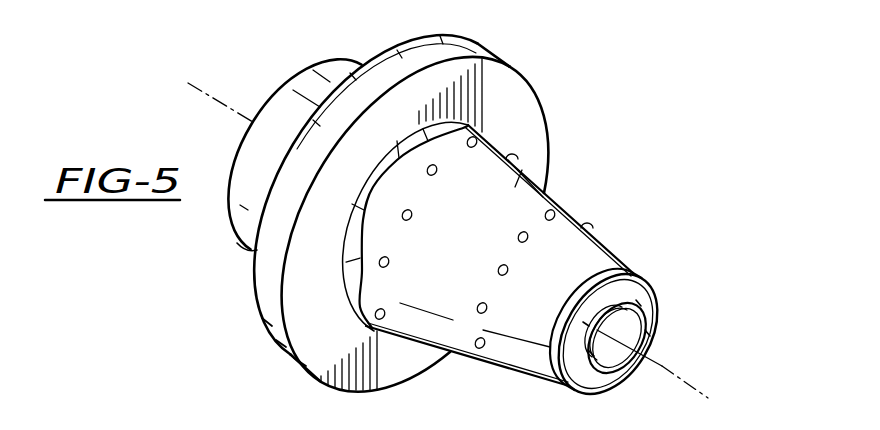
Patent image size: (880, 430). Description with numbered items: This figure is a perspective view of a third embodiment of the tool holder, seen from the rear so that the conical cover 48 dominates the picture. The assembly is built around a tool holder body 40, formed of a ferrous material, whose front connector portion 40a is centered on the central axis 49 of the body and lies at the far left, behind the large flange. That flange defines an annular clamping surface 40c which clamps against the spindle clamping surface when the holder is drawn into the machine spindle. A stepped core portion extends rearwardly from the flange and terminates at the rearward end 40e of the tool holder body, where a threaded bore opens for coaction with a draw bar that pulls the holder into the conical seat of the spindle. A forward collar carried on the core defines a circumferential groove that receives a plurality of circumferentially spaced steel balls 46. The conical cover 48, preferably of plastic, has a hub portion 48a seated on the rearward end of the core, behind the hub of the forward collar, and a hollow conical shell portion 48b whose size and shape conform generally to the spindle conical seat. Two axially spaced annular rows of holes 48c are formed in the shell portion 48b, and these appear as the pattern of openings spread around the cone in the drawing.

The tool holder body 40 is at (222, 256).
The front connector portion 40a is at (310, 87).
The annular clamping surface 40c is at (378, 365).
The rearward end of the tool holder body 40e is at (657, 310).
The balls 46 is at (482, 53).
The conical cover 48 is at (594, 258).
The hub portion 48a is at (620, 260).
The hollow conical shell portion 48b is at (528, 153).
The holes 48c is at (372, 312).
The central axis 49 is at (696, 372).